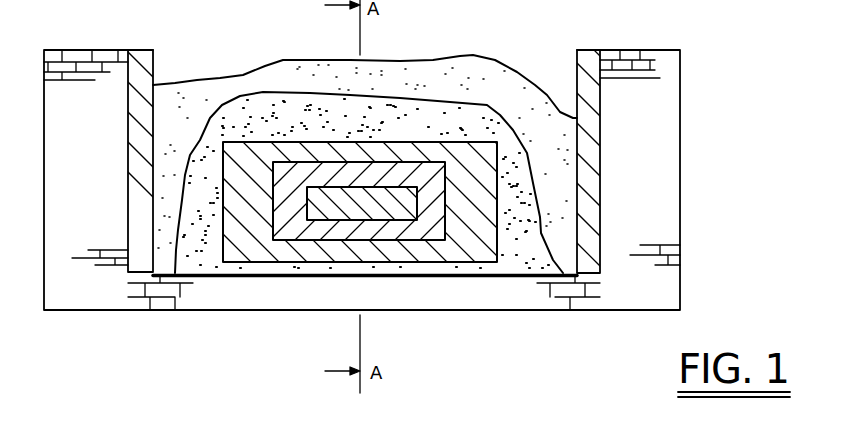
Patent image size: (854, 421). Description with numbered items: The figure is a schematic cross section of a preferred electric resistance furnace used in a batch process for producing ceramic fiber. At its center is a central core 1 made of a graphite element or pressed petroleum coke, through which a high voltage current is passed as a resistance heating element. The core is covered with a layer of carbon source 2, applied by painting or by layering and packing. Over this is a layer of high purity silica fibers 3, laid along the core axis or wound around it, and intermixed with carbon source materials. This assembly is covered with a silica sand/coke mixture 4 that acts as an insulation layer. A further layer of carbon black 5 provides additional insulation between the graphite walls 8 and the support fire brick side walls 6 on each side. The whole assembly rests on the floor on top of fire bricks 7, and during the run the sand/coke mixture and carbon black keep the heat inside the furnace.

The central core 1 is at (323, 216).
The layer of carbon source 2 is at (432, 212).
The layer of high purity silica fibers 3 is at (477, 160).
The silica sand/coke mixture 4 is at (415, 107).
The layer of carbon black 5 is at (282, 70).
The support fire brick side walls 6 is at (672, 158).
The fire bricks 7 is at (392, 293).
The graphite walls 8 is at (588, 50).